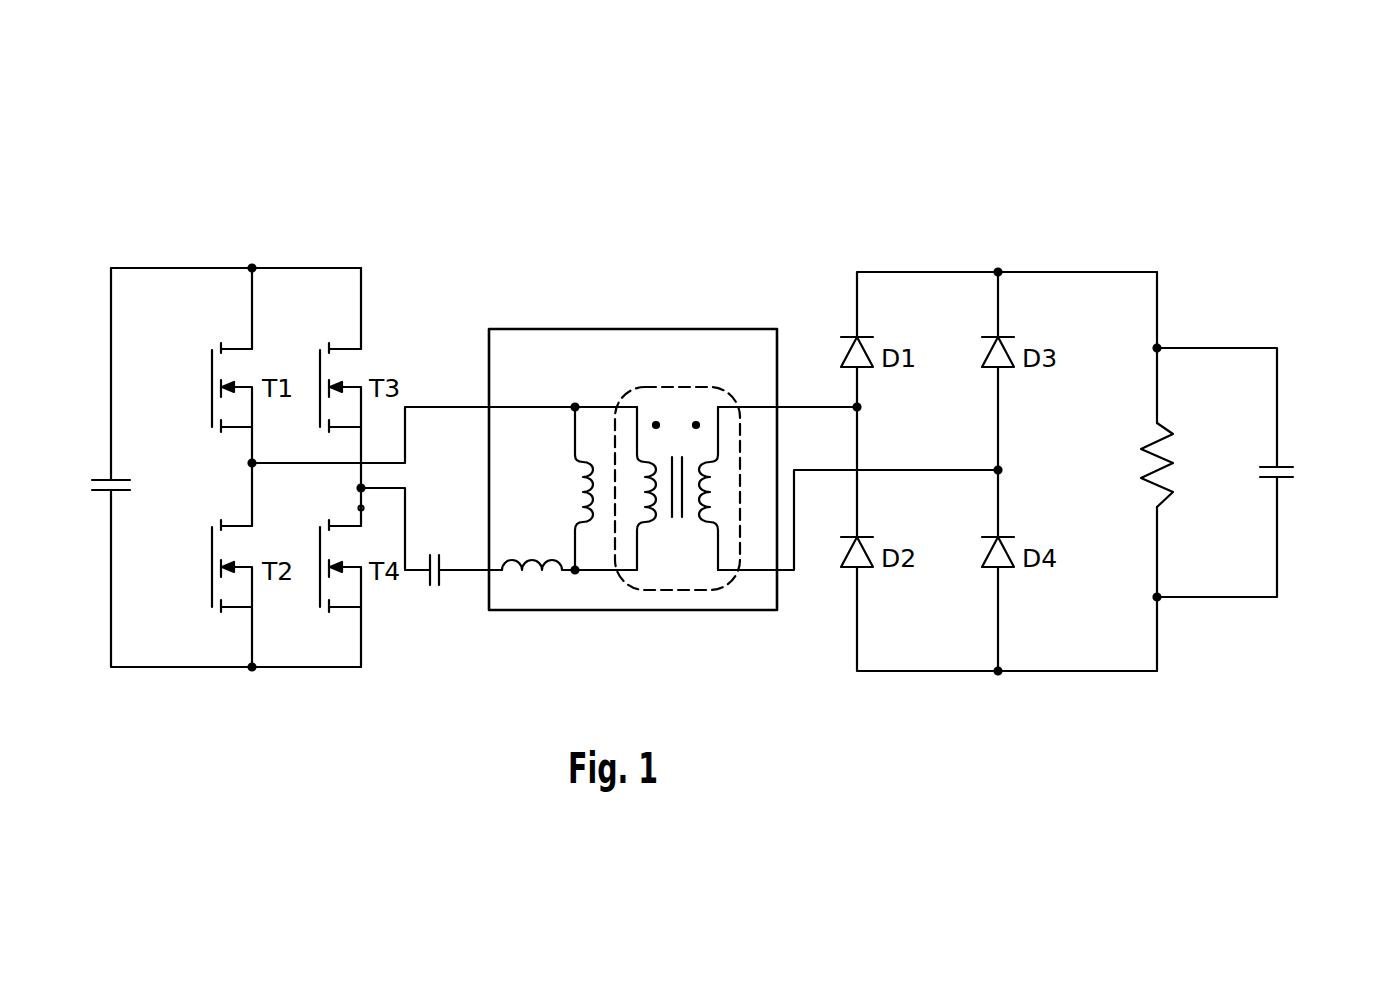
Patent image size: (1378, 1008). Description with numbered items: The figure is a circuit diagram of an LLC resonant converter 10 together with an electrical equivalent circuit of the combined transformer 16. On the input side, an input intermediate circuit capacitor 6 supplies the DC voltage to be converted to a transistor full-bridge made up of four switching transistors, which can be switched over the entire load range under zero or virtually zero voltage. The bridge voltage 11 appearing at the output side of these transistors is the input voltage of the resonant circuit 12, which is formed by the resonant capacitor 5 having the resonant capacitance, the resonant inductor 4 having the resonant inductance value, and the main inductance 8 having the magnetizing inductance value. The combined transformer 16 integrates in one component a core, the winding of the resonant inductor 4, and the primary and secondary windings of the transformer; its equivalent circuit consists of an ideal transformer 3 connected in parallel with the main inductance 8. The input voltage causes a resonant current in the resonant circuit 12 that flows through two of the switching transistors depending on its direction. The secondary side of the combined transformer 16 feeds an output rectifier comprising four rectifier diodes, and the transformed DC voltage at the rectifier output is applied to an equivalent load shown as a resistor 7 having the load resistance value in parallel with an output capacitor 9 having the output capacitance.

The LLC resonant converter 10 is at (483, 243).
The combined transformer 16 is at (530, 329).
The resonant circuit 12 is at (445, 456).
The bridge voltage 11 is at (358, 488).
The input intermediate circuit capacitor 6 is at (122, 492).
The resonant capacitor 5 is at (442, 581).
The resonant inductor 4 is at (522, 558).
The main inductance 8 is at (577, 467).
The ideal transformer 3 is at (700, 591).
The resistor 7 is at (1160, 482).
The output capacitor 9 is at (1285, 483).